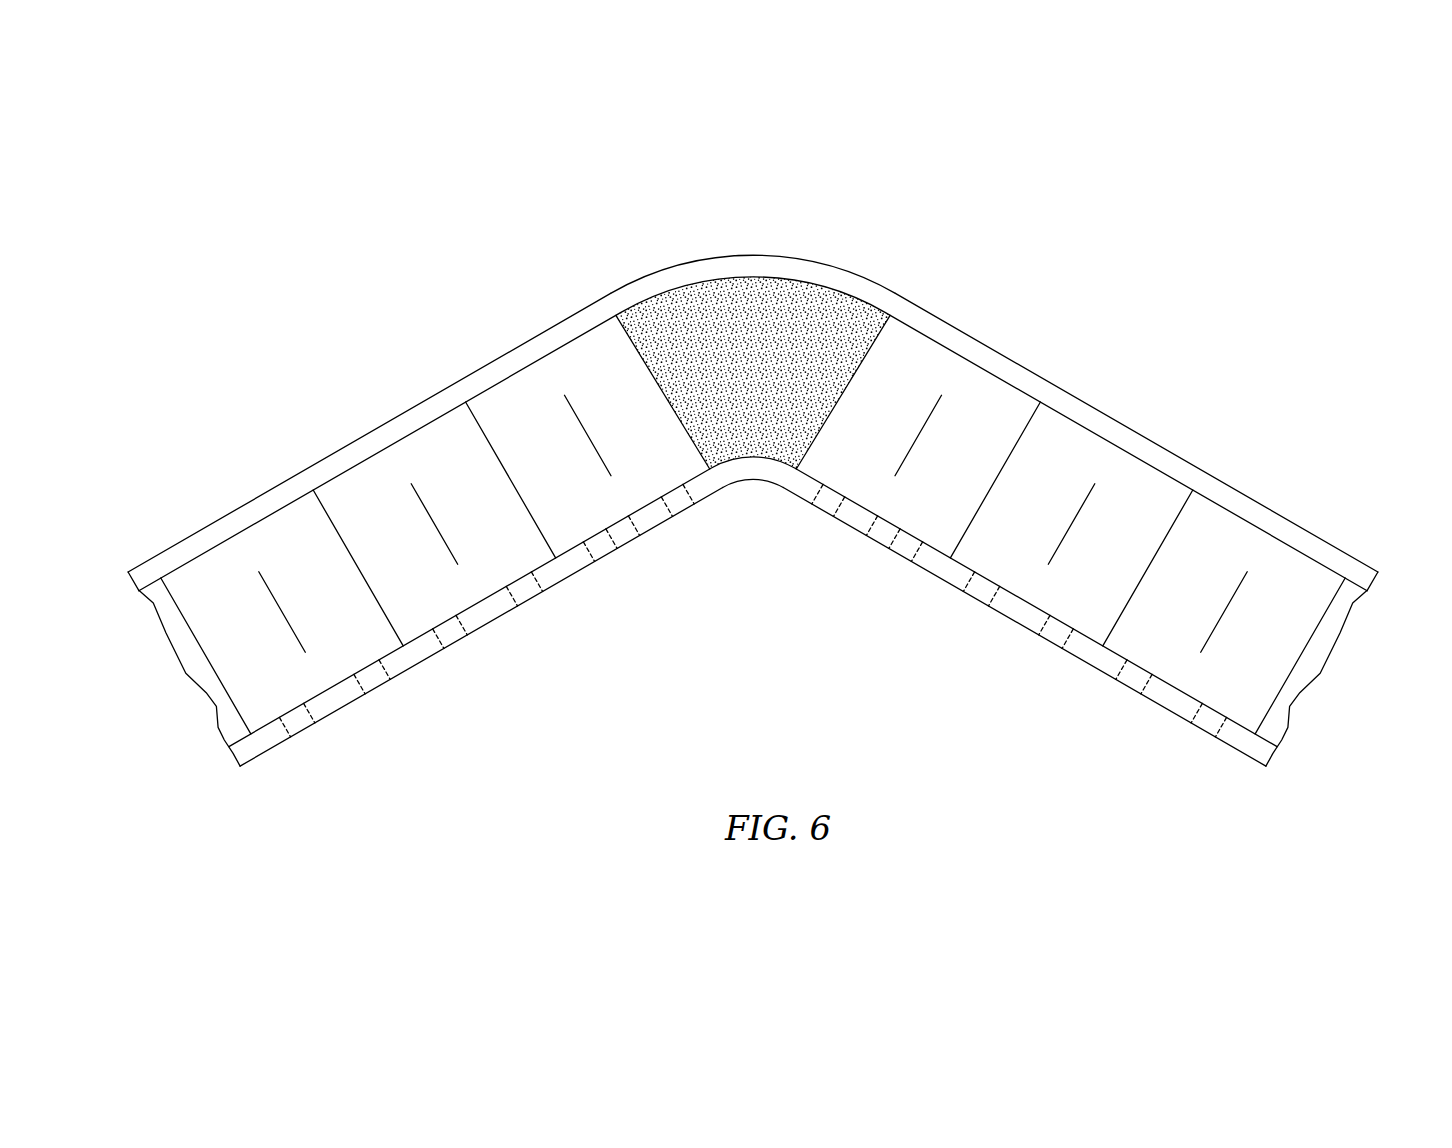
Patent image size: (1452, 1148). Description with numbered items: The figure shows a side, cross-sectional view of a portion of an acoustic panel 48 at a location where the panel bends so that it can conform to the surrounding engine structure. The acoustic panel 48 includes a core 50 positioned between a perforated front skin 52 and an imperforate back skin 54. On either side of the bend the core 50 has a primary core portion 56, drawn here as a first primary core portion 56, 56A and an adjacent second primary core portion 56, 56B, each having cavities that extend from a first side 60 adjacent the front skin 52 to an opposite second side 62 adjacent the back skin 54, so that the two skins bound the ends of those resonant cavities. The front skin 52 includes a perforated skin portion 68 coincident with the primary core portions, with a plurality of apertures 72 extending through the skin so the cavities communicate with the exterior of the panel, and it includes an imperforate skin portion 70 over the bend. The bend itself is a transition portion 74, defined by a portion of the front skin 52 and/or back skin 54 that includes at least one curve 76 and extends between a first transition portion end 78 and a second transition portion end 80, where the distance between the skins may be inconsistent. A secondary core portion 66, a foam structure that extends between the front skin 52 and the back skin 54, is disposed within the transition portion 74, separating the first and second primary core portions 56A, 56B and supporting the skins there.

The acoustic panel 48 is at (1289, 386).
The core 50 is at (1336, 677).
The front skin 52 is at (584, 570).
The back skin 54 is at (948, 322).
The primary core portion 56 is at (753, 557).
The first primary core portion 56A is at (413, 613).
The second primary core portion 56B is at (1025, 568).
The first side 60 is at (638, 536).
The second side 62 is at (348, 446).
The secondary core portion 66 is at (735, 367).
The perforated skin portion 68 is at (508, 633).
The imperforate skin portion 70 is at (744, 503).
The apertures 72 is at (377, 697).
The transition portion 74 is at (780, 250).
The curve 76 is at (708, 250).
The first transition portion end 78 is at (598, 275).
The second transition portion end 80 is at (902, 288).